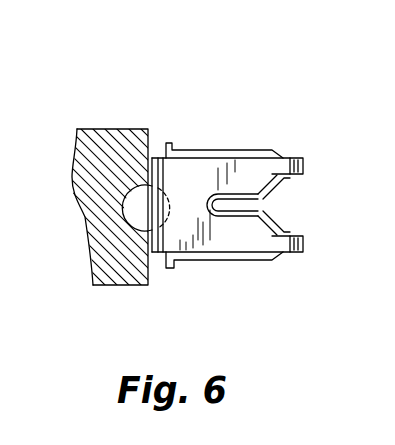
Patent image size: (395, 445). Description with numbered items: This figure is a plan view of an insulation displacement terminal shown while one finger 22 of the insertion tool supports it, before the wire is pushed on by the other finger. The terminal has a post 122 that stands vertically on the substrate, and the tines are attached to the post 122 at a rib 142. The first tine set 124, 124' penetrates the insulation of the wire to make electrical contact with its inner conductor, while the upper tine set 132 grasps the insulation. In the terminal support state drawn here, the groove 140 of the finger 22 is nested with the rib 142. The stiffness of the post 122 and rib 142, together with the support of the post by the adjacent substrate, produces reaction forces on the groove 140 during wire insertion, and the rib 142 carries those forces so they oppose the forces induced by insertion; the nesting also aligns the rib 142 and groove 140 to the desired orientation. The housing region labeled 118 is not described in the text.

The finger 22 is at (121, 278).
The housing 118 is at (225, 144).
The post 122 is at (151, 184).
The first tine set 124 is at (297, 183).
The first tine set 124' is at (301, 230).
The upper tine set 132 is at (244, 180).
The groove 140 is at (124, 204).
The rib 142 is at (123, 220).